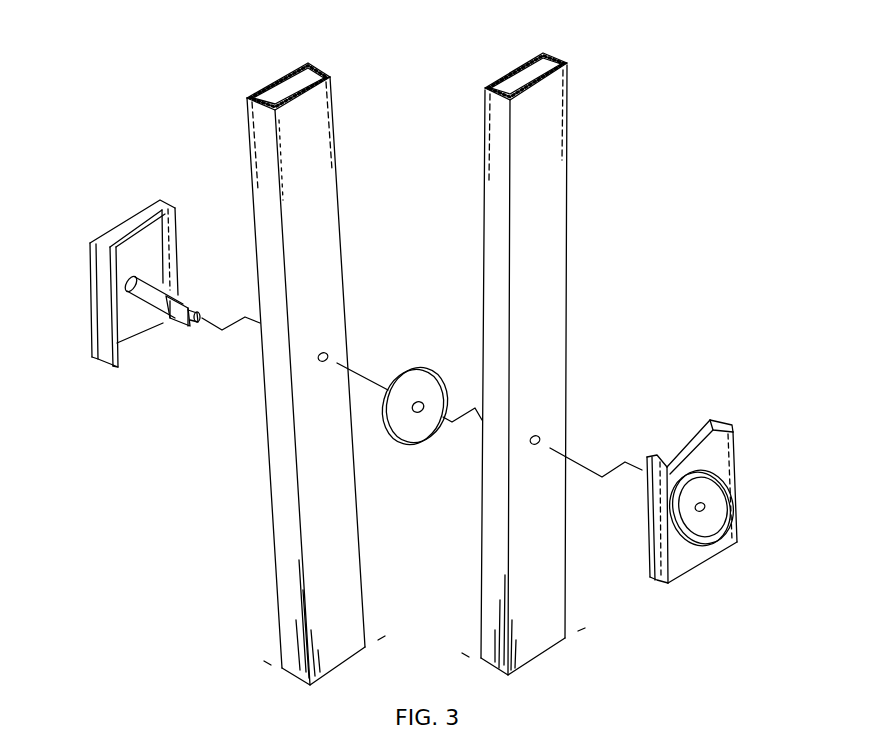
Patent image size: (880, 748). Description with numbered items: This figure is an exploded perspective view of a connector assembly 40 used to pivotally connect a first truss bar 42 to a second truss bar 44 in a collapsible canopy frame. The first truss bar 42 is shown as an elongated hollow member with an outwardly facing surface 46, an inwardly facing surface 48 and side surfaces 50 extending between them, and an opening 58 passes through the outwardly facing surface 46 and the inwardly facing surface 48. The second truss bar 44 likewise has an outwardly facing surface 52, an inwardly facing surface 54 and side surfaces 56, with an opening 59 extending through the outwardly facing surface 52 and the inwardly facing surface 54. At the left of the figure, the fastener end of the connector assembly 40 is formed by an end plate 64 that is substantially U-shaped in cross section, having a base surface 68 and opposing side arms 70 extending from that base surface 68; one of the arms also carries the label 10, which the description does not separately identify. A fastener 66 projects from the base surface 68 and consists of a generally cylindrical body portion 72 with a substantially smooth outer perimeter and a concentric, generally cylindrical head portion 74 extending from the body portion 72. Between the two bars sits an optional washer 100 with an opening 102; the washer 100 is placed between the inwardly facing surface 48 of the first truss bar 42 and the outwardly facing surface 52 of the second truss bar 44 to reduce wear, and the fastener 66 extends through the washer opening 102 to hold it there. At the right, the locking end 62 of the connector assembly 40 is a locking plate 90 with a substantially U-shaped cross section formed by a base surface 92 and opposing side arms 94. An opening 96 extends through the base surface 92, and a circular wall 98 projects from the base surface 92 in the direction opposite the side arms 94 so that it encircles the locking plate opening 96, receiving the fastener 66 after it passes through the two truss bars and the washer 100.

The mounting plate 10 is at (98, 253).
The connector assembly 40 is at (139, 259).
The first truss bar 42 is at (303, 355).
The second truss bar 44 is at (545, 344).
The outwardly facing surface 46 is at (316, 79).
The inwardly facing surface 48 is at (303, 97).
The side surfaces 50 is at (320, 73).
The outwardly facing surface 52 is at (549, 70).
The inwardly facing surface 54 is at (540, 83).
The side surfaces 56 is at (557, 53).
The opening 58 is at (333, 352).
The opening 59 is at (543, 438).
The locking end 62 is at (723, 479).
The end plate 64 is at (128, 246).
The fastener 66 is at (191, 317).
The base surface 68 is at (132, 212).
The side arms 70 is at (122, 217).
The body portion 72 is at (140, 307).
The head portion 74 is at (193, 320).
The locking plate 90 is at (685, 479).
The base surface 92 is at (687, 447).
The side arms 94 is at (648, 492).
The opening 96 is at (707, 507).
The wall 98 is at (707, 542).
The washer 100 is at (428, 434).
The opening 102 is at (420, 413).